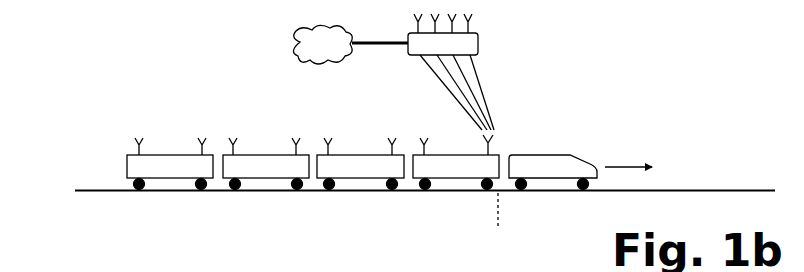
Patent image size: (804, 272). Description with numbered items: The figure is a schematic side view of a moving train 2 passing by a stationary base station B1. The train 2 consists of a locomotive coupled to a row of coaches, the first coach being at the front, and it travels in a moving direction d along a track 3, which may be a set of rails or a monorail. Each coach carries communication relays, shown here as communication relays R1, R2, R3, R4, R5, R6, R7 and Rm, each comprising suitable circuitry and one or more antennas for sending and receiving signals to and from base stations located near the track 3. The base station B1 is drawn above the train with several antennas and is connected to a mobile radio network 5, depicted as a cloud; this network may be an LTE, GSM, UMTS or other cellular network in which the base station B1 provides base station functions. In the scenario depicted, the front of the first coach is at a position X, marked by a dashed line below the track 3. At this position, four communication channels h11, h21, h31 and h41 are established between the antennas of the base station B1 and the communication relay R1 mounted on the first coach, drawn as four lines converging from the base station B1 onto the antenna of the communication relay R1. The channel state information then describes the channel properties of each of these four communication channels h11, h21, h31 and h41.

The train 2 is at (108, 162).
The track 3 is at (87, 193).
The mobile radio network 5 is at (300, 34).
The base station B1 is at (415, 34).
The moving direction d is at (628, 151).
The position X is at (498, 219).
The communication relay R1 is at (499, 143).
The communication relay R2 is at (424, 136).
The communication relay R3 is at (392, 136).
The communication relay R4 is at (328, 136).
The communication relay R5 is at (297, 136).
The communication relay R6 is at (234, 136).
The communication relay R7 is at (203, 136).
The communication relay Rm is at (139, 136).
The communication channel h11 is at (477, 70).
The communication channel h21 is at (475, 88).
The communication channel h31 is at (457, 88).
The communication channel h41 is at (428, 66).